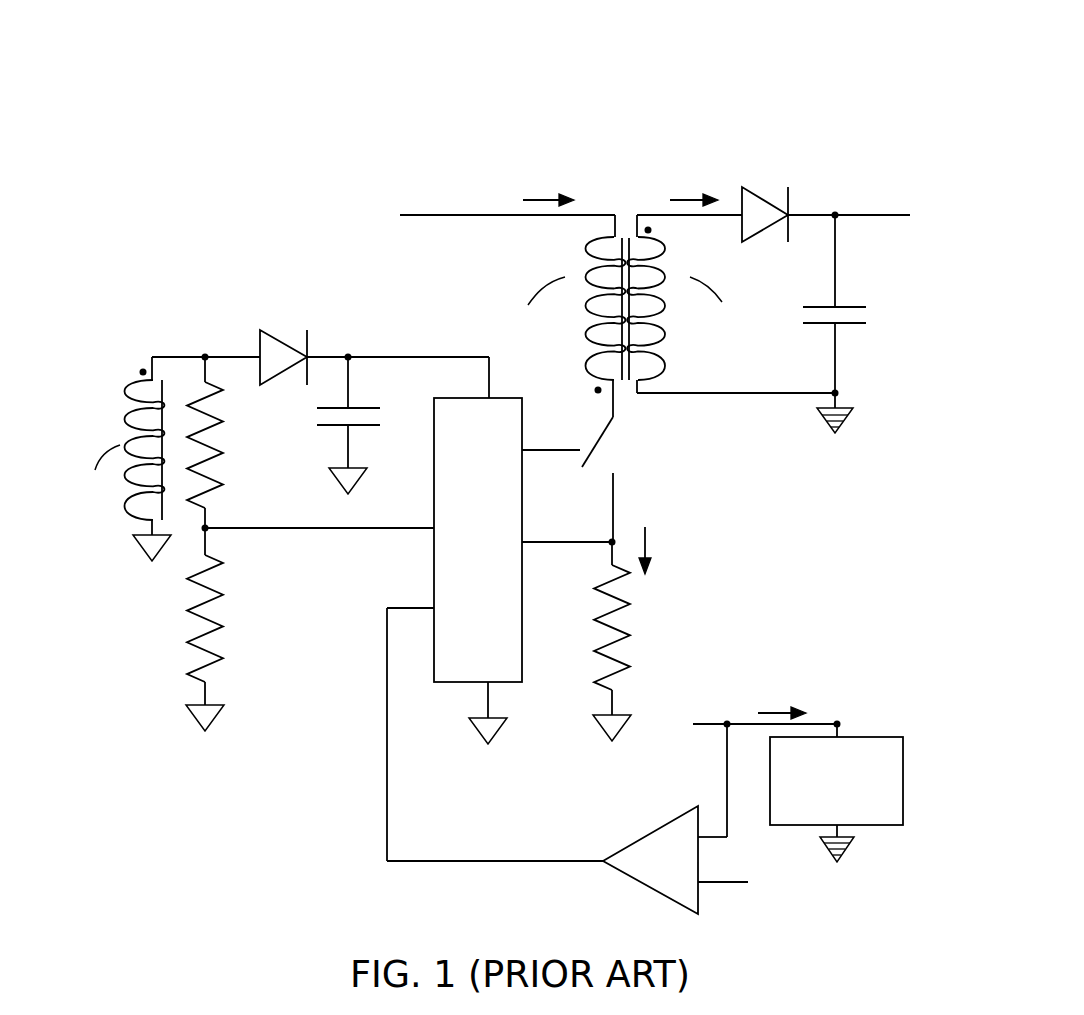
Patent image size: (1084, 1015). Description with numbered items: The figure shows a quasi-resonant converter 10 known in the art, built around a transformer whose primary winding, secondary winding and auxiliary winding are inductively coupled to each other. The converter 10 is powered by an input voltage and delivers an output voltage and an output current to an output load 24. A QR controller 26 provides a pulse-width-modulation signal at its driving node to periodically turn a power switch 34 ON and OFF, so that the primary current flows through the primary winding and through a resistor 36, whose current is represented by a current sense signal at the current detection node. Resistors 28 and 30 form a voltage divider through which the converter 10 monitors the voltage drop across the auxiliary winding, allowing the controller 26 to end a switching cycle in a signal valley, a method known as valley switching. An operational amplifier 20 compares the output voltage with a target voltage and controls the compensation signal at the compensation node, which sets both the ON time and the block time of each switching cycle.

The QR converter 10 is at (483, 99).
The operational amplifier 20 is at (652, 828).
The output load 24 is at (824, 805).
The QR controller 26 is at (466, 502).
The resistor 28 is at (218, 595).
The resistor 30 is at (218, 486).
The power switch 34 is at (622, 447).
The resistor 36 is at (628, 603).